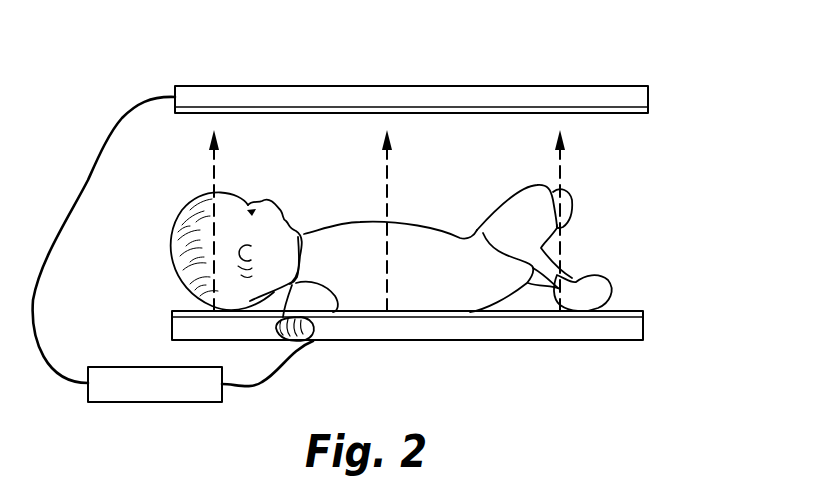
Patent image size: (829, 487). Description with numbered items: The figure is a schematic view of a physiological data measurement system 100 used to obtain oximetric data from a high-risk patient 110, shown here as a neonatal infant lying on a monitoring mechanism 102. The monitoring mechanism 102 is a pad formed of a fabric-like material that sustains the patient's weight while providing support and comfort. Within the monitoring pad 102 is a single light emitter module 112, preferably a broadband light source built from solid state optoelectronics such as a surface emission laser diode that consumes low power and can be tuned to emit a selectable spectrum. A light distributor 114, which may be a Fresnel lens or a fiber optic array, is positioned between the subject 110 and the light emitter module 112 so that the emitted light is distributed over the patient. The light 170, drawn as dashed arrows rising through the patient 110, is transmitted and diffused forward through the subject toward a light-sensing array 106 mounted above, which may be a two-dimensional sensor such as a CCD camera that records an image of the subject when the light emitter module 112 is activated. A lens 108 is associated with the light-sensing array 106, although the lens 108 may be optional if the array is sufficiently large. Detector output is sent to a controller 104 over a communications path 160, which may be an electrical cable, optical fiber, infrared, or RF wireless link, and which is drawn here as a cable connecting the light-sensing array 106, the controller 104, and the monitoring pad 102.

The physiological data measurement system 100 is at (103, 76).
The monitoring mechanism 102 is at (163, 311).
The controller 104 is at (100, 402).
The light-sensing array 106 is at (643, 100).
The lens 108 is at (643, 108).
The high-risk patient 110 is at (612, 282).
The light emitter module 112 is at (643, 331).
The light distributor 114 is at (643, 318).
The communications path 160 is at (90, 172).
The light 170 is at (214, 172).